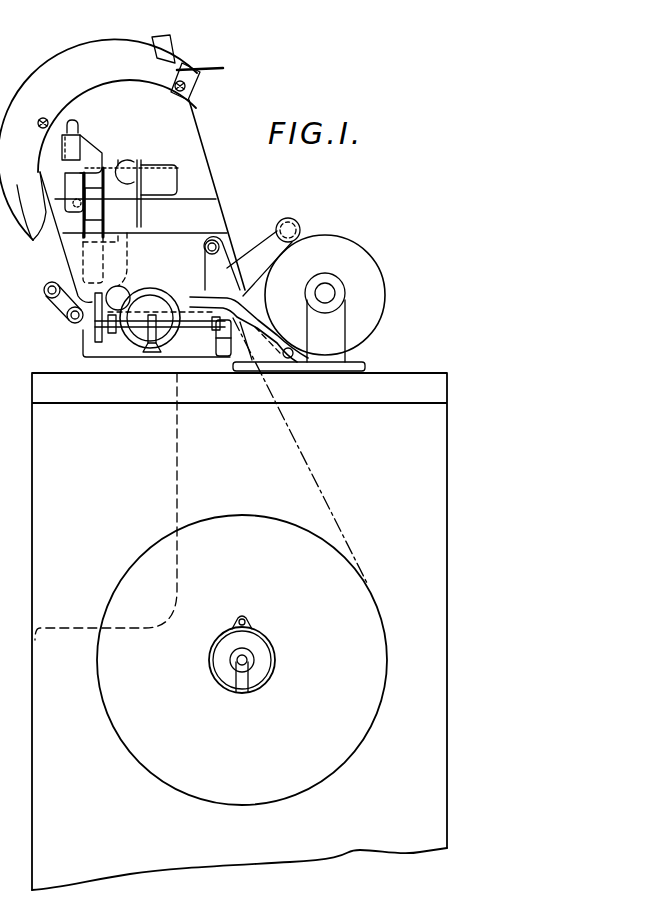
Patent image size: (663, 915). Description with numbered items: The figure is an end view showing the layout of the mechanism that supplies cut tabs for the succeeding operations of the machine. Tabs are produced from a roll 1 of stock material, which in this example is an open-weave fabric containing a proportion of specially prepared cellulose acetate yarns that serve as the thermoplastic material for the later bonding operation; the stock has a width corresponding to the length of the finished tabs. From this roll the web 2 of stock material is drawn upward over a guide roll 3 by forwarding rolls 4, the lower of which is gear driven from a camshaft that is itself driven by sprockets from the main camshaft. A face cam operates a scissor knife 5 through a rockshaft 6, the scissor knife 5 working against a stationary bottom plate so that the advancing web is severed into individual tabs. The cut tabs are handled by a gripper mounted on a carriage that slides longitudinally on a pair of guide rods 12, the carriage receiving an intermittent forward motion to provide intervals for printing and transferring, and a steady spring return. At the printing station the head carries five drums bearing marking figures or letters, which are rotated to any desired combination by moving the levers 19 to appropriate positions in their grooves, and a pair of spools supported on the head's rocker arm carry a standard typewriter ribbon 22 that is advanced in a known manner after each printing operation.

The roll of stock material 1 is at (360, 705).
The web of stock material 2 is at (313, 471).
The guide roll 3 is at (230, 322).
The forwarding rolls 4 is at (135, 352).
The scissor knife 5 is at (89, 334).
The rockshaft 6 is at (203, 323).
The guide rods 12 is at (51, 298).
The levers 19 is at (167, 50).
The typewriter ribbon 22 is at (93, 262).